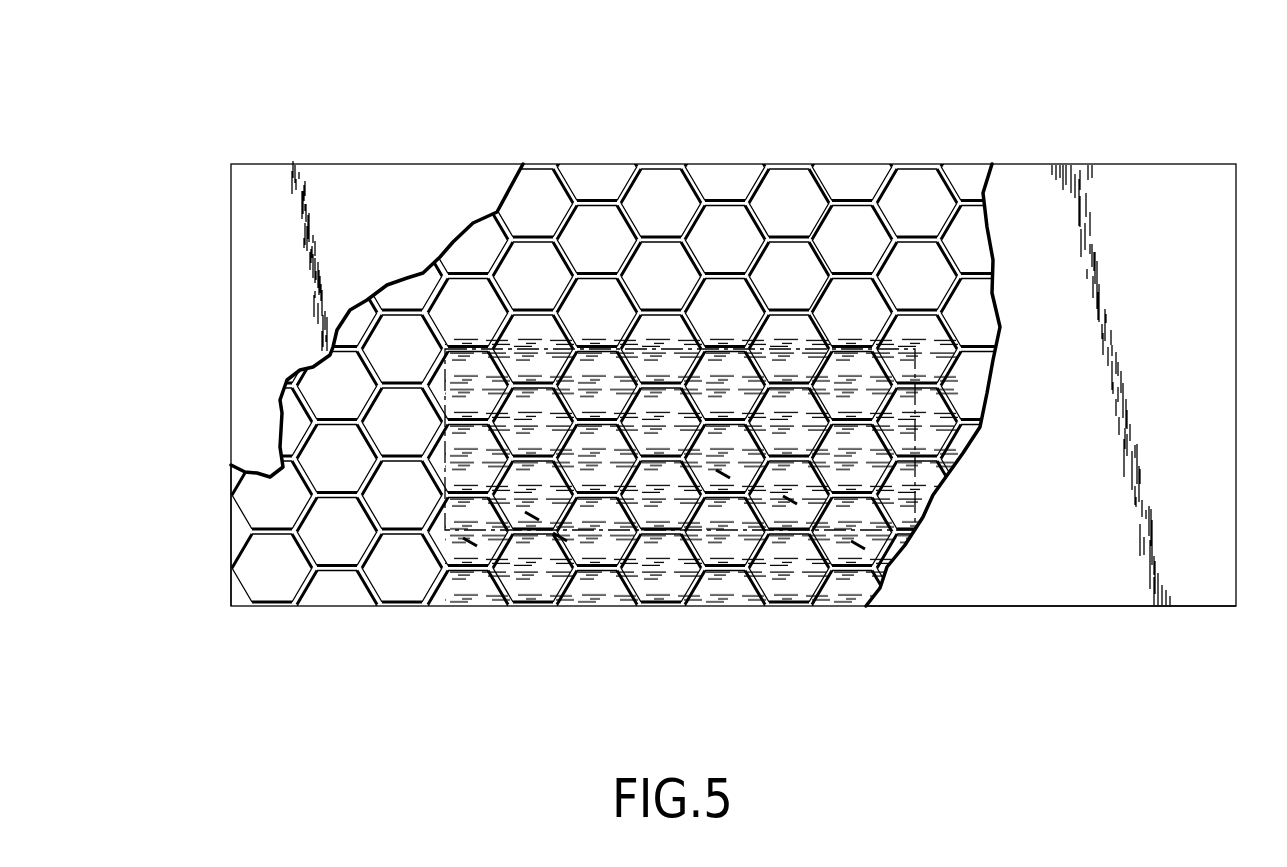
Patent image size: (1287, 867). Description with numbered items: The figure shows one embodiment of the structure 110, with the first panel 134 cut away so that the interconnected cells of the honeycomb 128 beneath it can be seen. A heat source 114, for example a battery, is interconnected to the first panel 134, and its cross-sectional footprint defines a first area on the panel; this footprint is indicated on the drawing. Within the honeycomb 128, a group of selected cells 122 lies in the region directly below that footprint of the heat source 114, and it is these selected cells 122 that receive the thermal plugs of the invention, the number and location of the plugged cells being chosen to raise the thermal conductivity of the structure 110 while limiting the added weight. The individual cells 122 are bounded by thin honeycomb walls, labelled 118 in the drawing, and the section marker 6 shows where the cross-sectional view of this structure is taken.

The section line 6- 6 is at (600, 147).
The structure 110 is at (659, 383).
The heat source 114 is at (680, 361).
The cell walls 118 is at (663, 574).
The selected cells 122 is at (656, 396).
The honeycomb 128 is at (208, 586).
The first panel 134 is at (1051, 674).